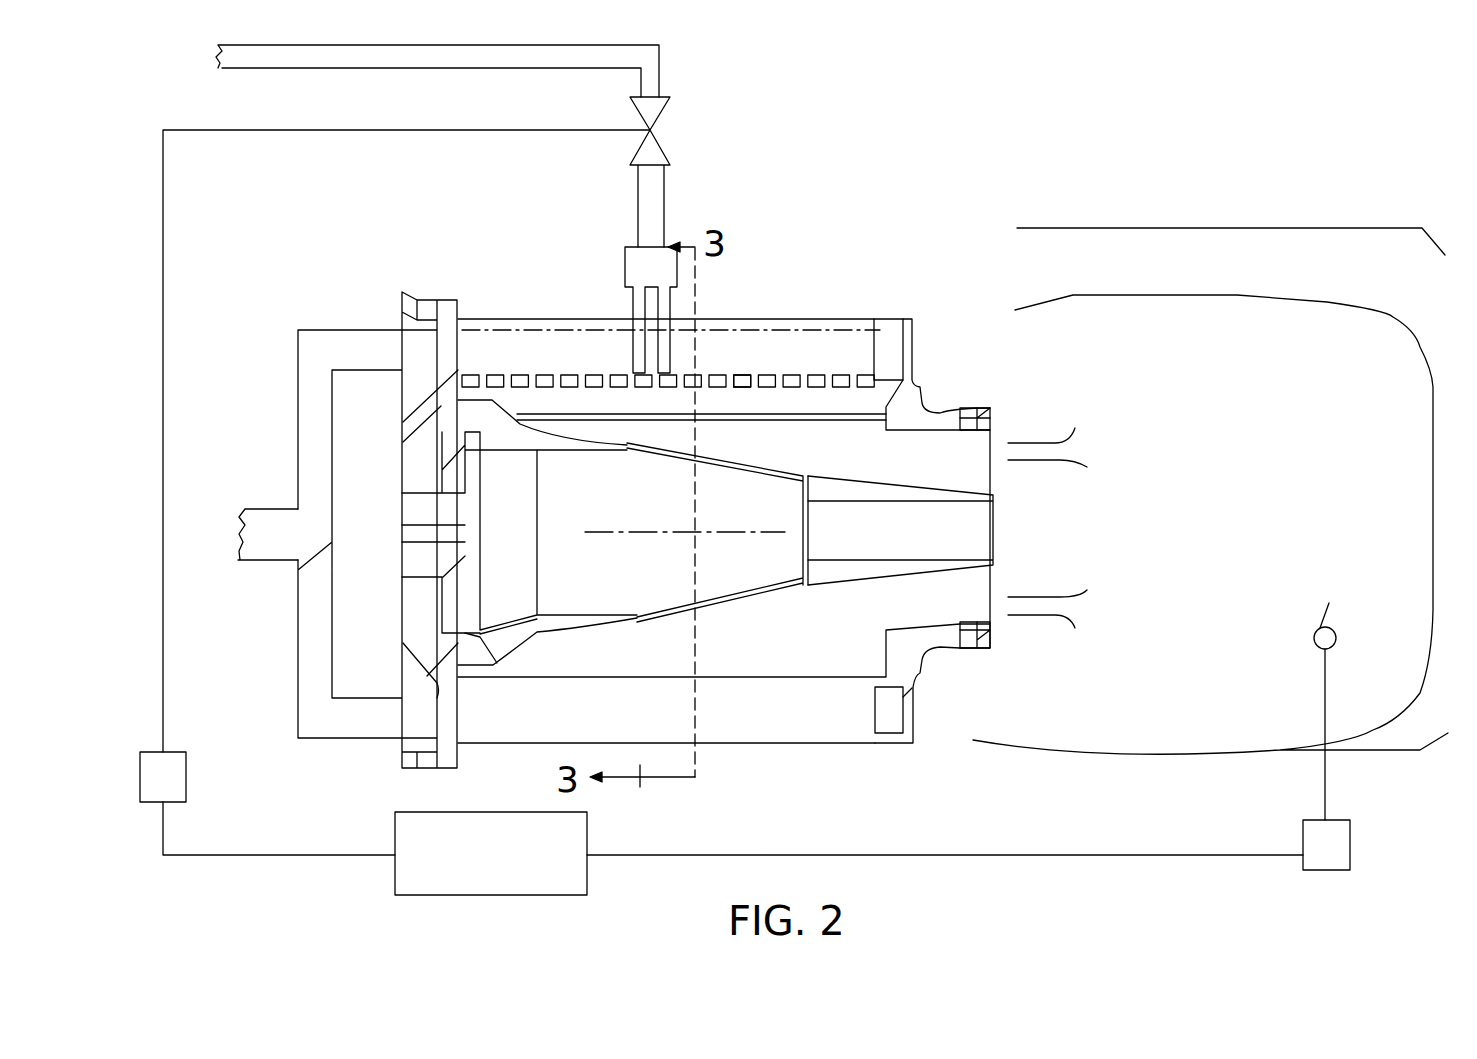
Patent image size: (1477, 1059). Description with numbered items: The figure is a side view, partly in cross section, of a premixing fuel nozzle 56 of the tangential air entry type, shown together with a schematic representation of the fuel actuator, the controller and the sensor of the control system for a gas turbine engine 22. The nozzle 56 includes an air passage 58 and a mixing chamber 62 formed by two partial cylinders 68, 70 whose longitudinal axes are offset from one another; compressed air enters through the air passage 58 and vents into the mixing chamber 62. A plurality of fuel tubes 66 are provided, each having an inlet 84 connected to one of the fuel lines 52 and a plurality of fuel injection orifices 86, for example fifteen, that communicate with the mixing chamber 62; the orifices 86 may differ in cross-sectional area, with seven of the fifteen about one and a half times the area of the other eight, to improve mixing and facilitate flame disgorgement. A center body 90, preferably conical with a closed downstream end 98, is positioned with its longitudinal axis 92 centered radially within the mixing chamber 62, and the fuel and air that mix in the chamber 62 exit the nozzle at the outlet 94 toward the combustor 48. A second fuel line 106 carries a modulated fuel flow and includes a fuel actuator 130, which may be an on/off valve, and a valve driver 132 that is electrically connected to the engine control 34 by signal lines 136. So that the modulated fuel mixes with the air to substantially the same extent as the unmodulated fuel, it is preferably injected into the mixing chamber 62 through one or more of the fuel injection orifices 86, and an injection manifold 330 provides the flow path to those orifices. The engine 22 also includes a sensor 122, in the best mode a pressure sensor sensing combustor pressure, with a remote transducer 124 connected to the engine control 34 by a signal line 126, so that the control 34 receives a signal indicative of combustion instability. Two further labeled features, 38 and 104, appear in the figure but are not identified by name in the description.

The gas turbine engine 22 is at (1292, 215).
The engine control 34 is at (590, 850).
The furnace wall 38 is at (1177, 228).
The combustor 48 is at (1290, 490).
The fuel lines 52 is at (622, 230).
The premixing fuel nozzle 56 is at (860, 298).
The air passage 58 is at (575, 413).
The mixing chamber 62 is at (833, 457).
The fuel tubes 66 is at (887, 330).
The partial cylinder 68 is at (771, 375).
The partial cylinder 70 is at (782, 417).
The inlet 84 is at (344, 328).
The fuel injection orifices 86 is at (752, 375).
The center body 90 is at (712, 453).
The longitudinal axis 92 is at (620, 532).
The outlet 94 is at (1008, 435).
The closed downstream end 98 is at (996, 522).
The air inlet duct 104 is at (258, 506).
The second fuel line 106 is at (290, 82).
The sensor 122 is at (1298, 686).
The remote transducer 124 is at (1338, 820).
The signal line 126 is at (1150, 847).
The fuel actuator 130 is at (680, 92).
The valve driver 132 is at (188, 779).
The signal lines 136 is at (165, 834).
The injection manifold 330 is at (623, 277).